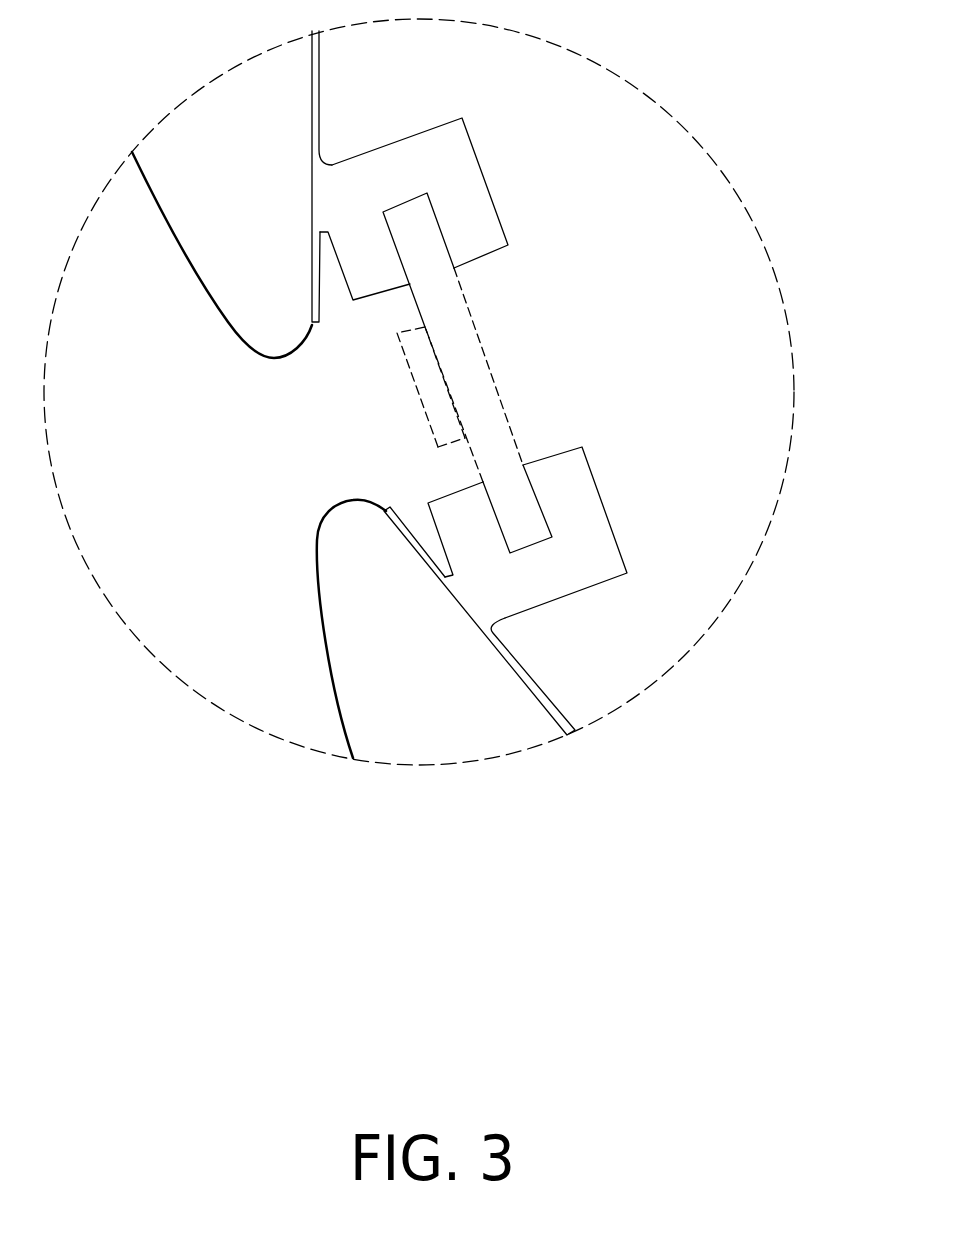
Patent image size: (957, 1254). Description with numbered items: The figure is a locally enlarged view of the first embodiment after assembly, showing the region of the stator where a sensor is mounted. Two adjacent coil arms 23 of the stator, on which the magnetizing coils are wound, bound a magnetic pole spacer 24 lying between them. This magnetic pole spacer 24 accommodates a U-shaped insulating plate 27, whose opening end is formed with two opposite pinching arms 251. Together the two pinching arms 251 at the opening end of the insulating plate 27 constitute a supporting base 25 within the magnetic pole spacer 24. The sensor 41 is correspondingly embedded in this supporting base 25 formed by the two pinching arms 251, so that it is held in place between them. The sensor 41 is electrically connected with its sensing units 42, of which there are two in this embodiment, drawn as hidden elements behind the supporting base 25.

The coil arm 23 is at (197, 255).
The magnetic pole spacer 24 is at (700, 585).
The supporting base 25 is at (612, 184).
The pinching arm 251 is at (477, 213).
The insulating plate 27 is at (315, 77).
The sensor 41 is at (420, 313).
The sensing unit 42 is at (432, 429).